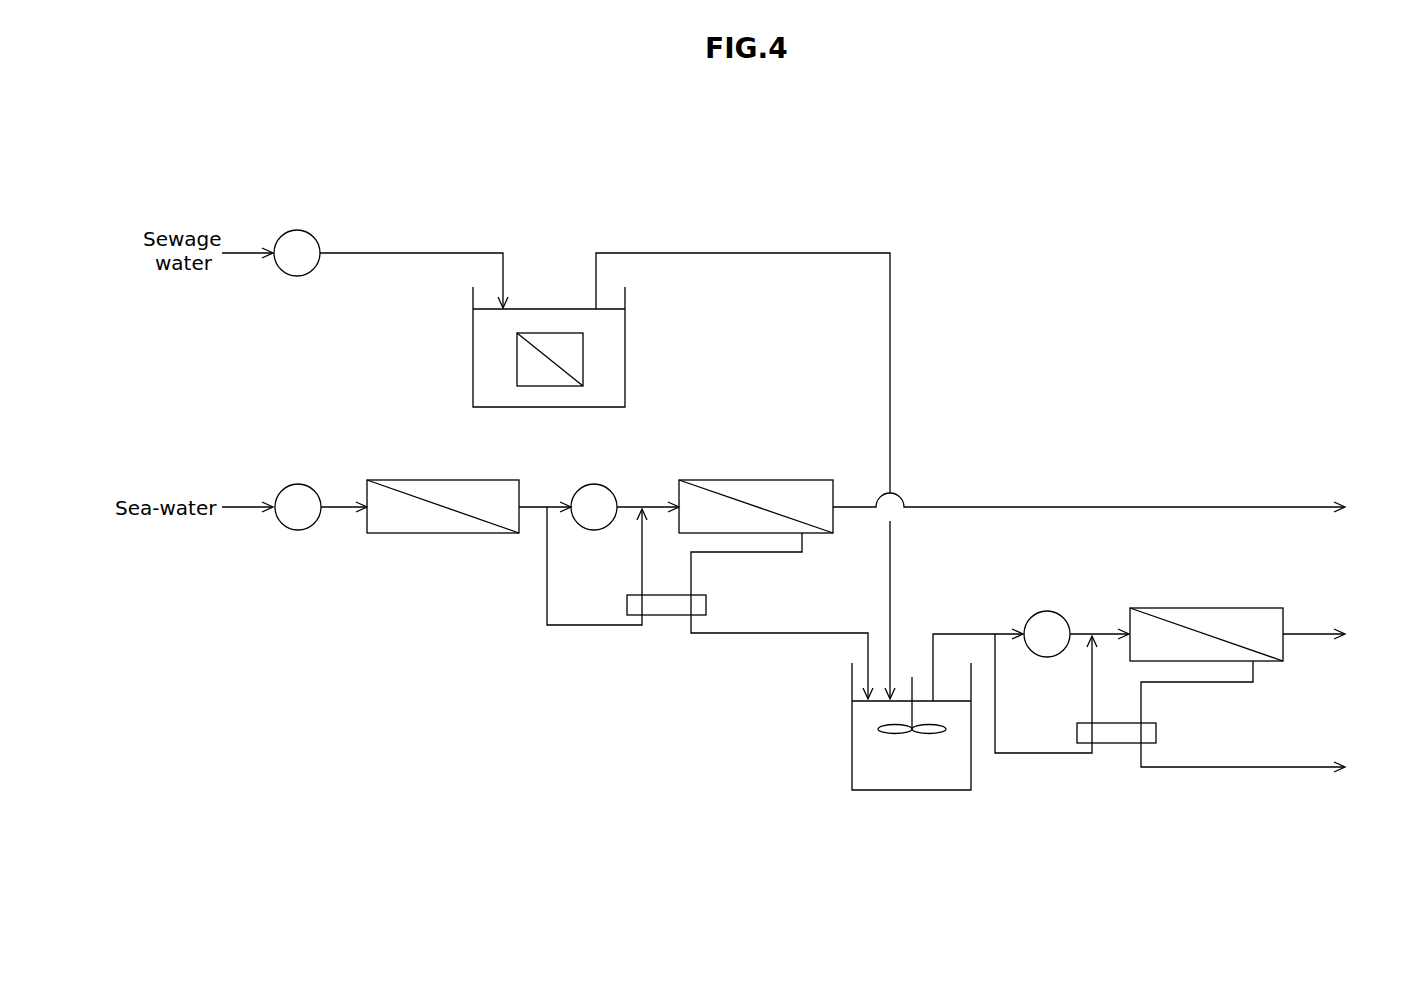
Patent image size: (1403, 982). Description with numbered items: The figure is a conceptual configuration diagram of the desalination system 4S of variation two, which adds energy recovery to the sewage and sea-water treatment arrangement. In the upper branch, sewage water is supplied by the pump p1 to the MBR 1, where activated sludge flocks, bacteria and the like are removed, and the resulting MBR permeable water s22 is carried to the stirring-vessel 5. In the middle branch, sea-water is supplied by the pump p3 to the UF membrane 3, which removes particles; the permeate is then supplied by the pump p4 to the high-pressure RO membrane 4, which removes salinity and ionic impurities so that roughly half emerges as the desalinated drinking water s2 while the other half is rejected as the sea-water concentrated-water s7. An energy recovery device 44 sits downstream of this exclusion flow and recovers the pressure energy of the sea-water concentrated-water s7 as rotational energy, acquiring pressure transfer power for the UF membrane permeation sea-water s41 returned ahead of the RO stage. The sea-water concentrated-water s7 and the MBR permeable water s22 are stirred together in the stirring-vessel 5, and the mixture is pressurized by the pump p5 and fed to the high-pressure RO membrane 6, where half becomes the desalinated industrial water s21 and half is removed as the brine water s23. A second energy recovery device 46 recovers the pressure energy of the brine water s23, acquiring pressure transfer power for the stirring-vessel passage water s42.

The desalination system 4S is at (1023, 140).
The pump p1 is at (297, 230).
The MBR 1 is at (473, 351).
The MBR permeable water s22 is at (891, 355).
The pump p3 is at (298, 484).
The UF membrane 3 is at (410, 480).
The pump p4 is at (594, 484).
The high-pressure RO membrane 4 is at (700, 480).
The UF membrane permeation sea-water s41 is at (546, 585).
The energy recovery device 44 is at (665, 615).
The sea-water concentrated-water s7 is at (745, 552).
The drinking water s2 is at (1105, 506).
The stirring-vessel 5 is at (852, 742).
The pump p5 is at (1050, 611).
The high-pressure RO membrane 6 is at (1150, 608).
The industrial water s21 is at (1337, 635).
The stirring-vessel passage water s42 is at (996, 692).
The energy recovery device 46 is at (1115, 743).
The brine water s23 is at (1266, 721).